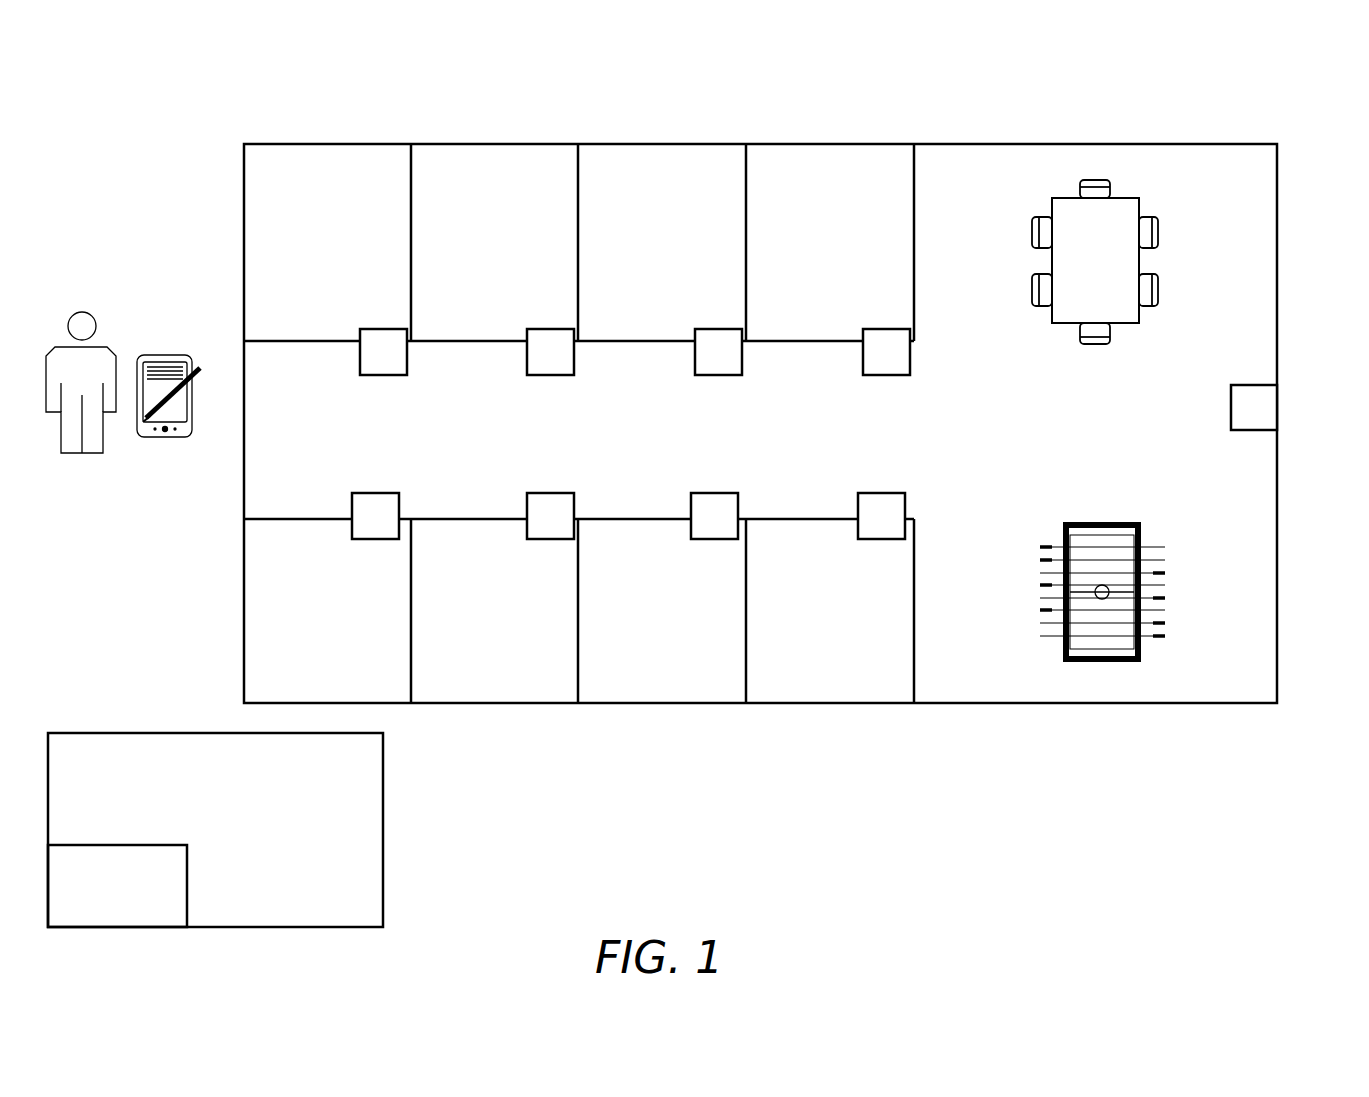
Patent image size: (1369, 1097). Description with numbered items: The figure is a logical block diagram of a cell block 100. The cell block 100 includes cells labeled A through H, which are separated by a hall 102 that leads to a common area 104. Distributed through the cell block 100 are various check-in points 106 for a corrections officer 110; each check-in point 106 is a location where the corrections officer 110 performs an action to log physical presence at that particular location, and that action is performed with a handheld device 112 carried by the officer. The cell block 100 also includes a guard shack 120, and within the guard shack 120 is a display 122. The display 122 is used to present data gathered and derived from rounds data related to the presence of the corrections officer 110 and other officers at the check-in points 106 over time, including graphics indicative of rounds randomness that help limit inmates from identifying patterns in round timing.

The cell block 100 is at (222, 126).
The hall 102 is at (298, 441).
The common area 104 is at (1193, 195).
The check-in point 106 is at (390, 375).
The corrections officer 110 is at (83, 310).
The handheld device 112 is at (143, 357).
The guard shack 120 is at (215, 830).
The display 122 is at (117, 886).